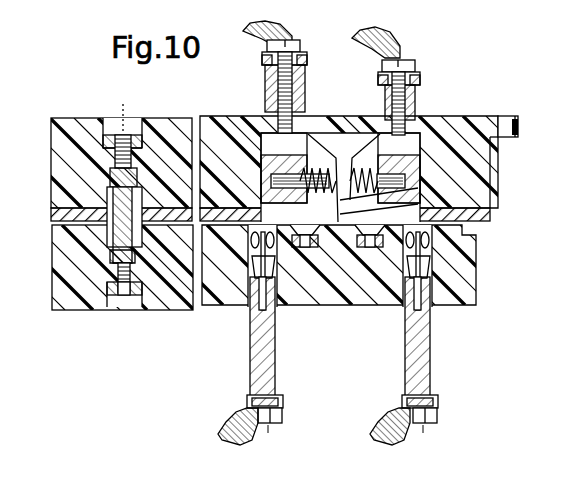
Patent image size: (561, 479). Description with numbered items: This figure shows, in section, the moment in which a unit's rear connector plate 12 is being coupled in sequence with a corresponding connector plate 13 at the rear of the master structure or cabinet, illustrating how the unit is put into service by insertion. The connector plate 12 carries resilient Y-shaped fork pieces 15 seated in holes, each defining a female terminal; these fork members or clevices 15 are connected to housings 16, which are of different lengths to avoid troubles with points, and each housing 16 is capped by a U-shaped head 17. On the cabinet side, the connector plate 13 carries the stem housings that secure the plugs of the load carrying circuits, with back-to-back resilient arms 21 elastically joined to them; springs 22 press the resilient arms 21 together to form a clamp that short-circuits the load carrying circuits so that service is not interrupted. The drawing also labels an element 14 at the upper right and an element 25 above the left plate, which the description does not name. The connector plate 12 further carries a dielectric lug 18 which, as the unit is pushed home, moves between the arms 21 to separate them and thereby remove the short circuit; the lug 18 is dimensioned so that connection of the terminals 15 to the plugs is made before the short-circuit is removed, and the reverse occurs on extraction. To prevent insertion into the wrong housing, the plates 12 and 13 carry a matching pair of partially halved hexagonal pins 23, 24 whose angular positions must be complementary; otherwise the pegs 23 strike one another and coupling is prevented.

The connector plate 12 is at (55, 280).
The connector plate 13 is at (72, 124).
The right clamping screw 14 is at (413, 103).
The fork piece 15 is at (422, 268).
The housing 16 is at (432, 346).
The U-shaped head 17 is at (436, 403).
The dielectric lug 18 is at (413, 185).
The resilient arm 21 is at (373, 138).
The spring 22 is at (280, 110).
The hexagonal pin 23 is at (113, 232).
The hexagonal pin 24 is at (118, 298).
The adjusting screw 25 is at (138, 183).